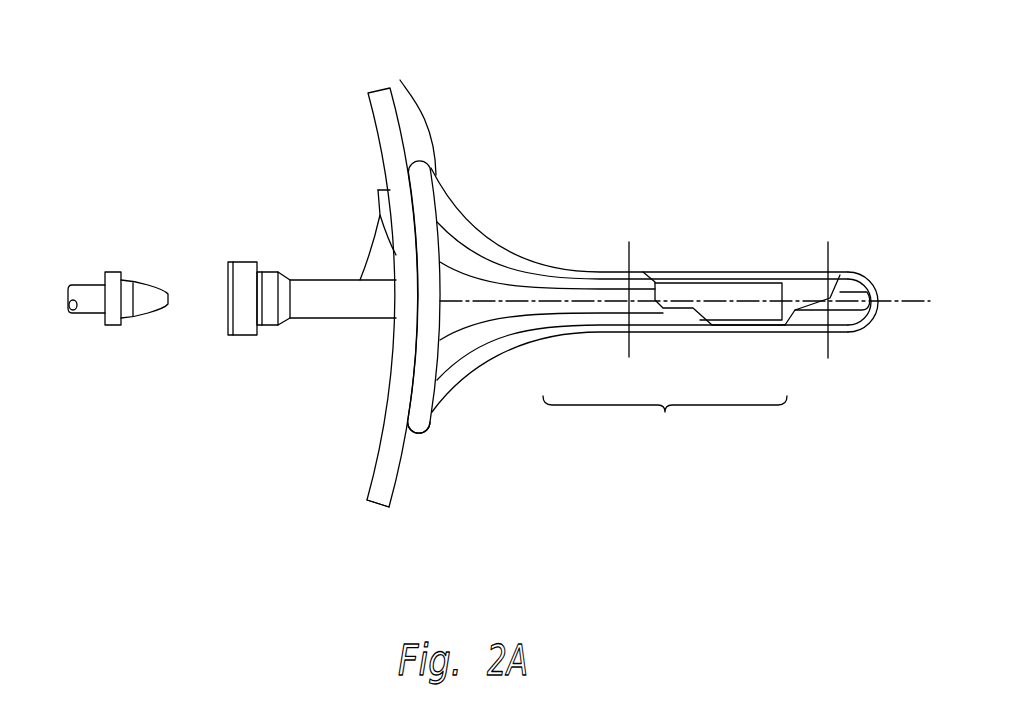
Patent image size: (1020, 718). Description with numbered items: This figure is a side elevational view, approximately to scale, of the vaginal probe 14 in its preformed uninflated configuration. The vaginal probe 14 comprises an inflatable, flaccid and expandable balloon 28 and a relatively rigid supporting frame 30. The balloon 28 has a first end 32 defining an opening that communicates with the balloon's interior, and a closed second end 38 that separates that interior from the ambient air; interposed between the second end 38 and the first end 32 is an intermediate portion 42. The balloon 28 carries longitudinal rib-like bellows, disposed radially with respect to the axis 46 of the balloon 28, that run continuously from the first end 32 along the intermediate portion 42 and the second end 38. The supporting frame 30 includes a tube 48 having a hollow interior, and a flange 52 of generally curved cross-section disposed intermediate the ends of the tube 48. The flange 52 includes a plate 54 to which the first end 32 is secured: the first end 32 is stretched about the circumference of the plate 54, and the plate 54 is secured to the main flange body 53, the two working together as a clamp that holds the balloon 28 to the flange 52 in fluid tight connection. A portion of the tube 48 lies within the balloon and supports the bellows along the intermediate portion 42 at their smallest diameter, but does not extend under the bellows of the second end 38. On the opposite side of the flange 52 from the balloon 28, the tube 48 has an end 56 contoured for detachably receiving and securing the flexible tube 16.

The vaginal probe 14 is at (706, 128).
The flexible tube 16 is at (90, 282).
The balloon 28 is at (573, 268).
The supporting frame 30 is at (395, 203).
The first end 32 is at (449, 205).
The second end 38 is at (860, 275).
The intermediate portion 42 is at (665, 420).
The axis 46 is at (922, 303).
The tube 48 is at (318, 320).
The flange 52 is at (396, 88).
The main flange body 53 is at (366, 501).
The plate 54 is at (431, 425).
The end 56 is at (262, 270).